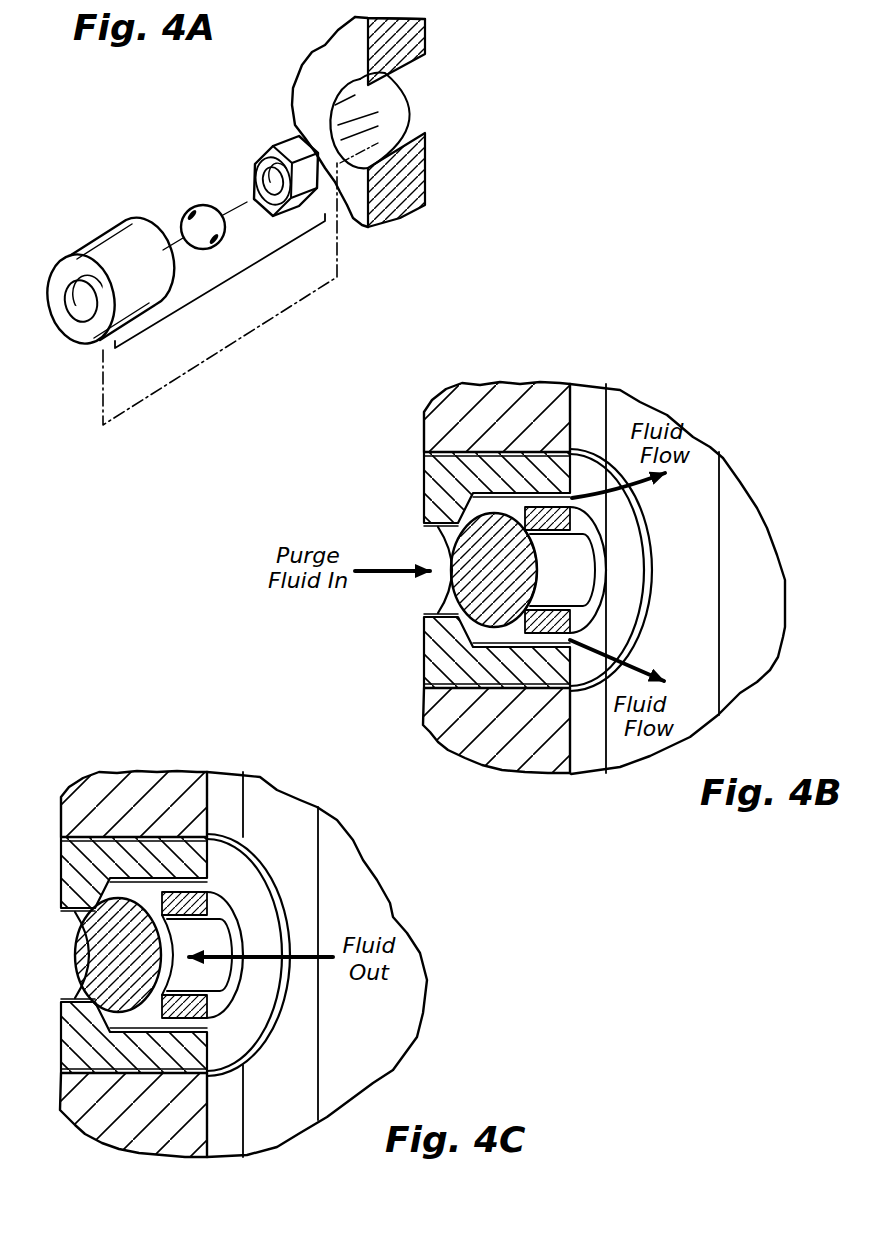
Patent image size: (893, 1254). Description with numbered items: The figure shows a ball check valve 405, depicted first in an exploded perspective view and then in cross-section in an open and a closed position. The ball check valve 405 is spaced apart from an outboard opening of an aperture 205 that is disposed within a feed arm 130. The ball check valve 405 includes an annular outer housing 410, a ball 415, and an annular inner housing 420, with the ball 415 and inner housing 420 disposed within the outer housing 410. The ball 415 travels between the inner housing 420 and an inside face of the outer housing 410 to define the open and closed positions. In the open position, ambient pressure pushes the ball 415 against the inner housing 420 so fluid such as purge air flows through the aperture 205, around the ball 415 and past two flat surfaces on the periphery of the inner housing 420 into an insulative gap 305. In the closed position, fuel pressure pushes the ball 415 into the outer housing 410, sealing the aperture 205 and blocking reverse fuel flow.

In FIG. 4A, the feed arm 130 is at (341, 122).
In FIG. 4B, the feed arm 130 is at (604, 560).
In FIG. 4C, the feed arm 130 is at (243, 942).
In FIG. 4A, the aperture 205 is at (345, 122).
In FIG. 4B, the aperture 205 is at (404, 596).
In FIG. 4C, the aperture 205 is at (49, 971).
In FIG. 4B, the insulative gap 305 is at (677, 579).
In FIG. 4C, the insulative gap 305 is at (317, 964).
In FIG. 4A, the ball check valve 405 is at (224, 294).
In FIG. 4A, the outer housing 410 is at (92, 247).
In FIG. 4B, the outer housing 410 is at (465, 567).
In FIG. 4C, the outer housing 410 is at (113, 948).
In FIG. 4A, the ball 415 is at (183, 223).
In FIG. 4B, the ball 415 is at (455, 567).
In FIG. 4C, the ball 415 is at (89, 955).
In FIG. 4A, the inner housing 420 is at (255, 177).
In FIG. 4B, the inner housing 420 is at (609, 570).
In FIG. 4C, the inner housing 420 is at (232, 925).